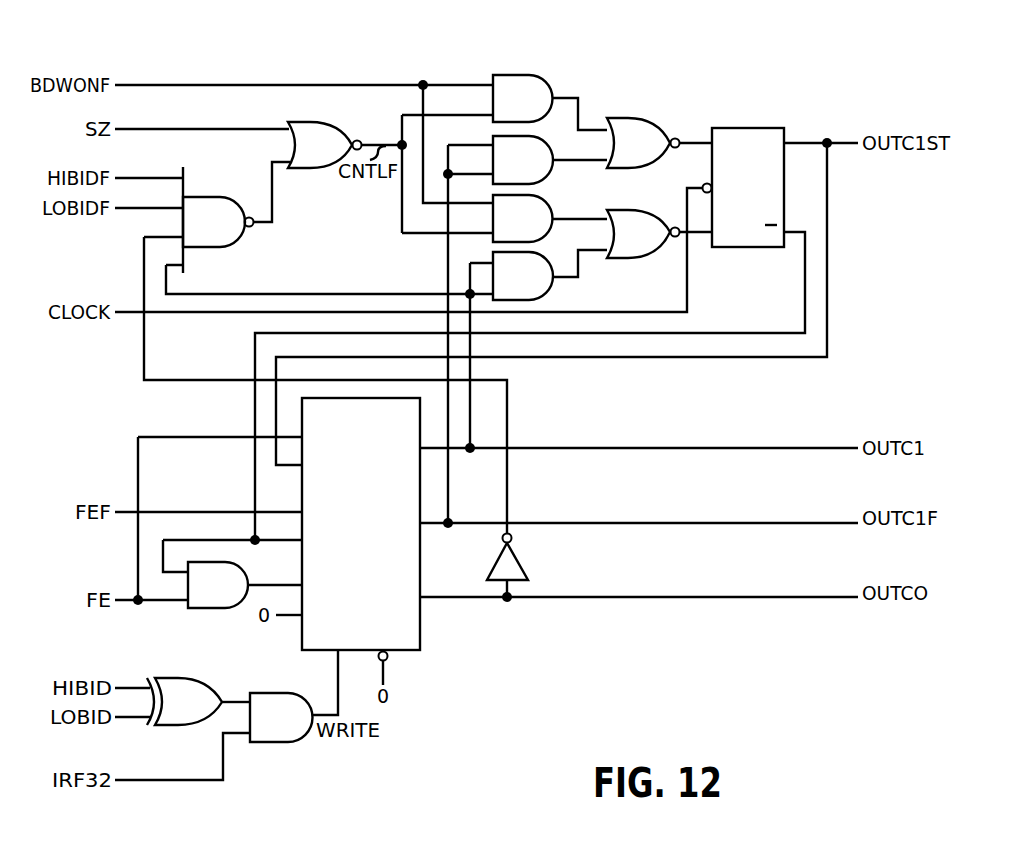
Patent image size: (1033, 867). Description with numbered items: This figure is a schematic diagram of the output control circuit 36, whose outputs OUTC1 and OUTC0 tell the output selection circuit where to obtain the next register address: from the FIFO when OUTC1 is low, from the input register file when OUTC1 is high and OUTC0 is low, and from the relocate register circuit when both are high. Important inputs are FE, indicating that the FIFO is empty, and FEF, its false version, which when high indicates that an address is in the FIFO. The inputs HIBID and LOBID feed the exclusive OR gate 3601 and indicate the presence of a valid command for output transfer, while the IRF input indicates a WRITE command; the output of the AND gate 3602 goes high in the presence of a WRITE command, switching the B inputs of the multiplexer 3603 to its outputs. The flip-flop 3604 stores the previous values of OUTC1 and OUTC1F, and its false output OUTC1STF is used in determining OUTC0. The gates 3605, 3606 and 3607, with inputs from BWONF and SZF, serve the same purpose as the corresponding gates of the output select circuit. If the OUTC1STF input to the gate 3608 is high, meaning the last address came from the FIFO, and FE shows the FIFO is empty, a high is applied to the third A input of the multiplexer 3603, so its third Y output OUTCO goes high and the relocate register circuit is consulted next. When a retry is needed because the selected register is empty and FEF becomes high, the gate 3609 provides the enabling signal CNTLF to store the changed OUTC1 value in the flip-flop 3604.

The output control circuit 36 is at (652, 646).
The exclusive OR gate 3601 is at (162, 678).
The AND gate 3602 is at (275, 693).
The multiplexer 3603 is at (420, 631).
The flip-flop 3604 is at (745, 128).
The gate 3605 is at (530, 75).
The gate 3606 is at (553, 172).
The gate 3607 is at (638, 118).
The gate 3608 is at (210, 608).
The gate 3609 is at (238, 240).